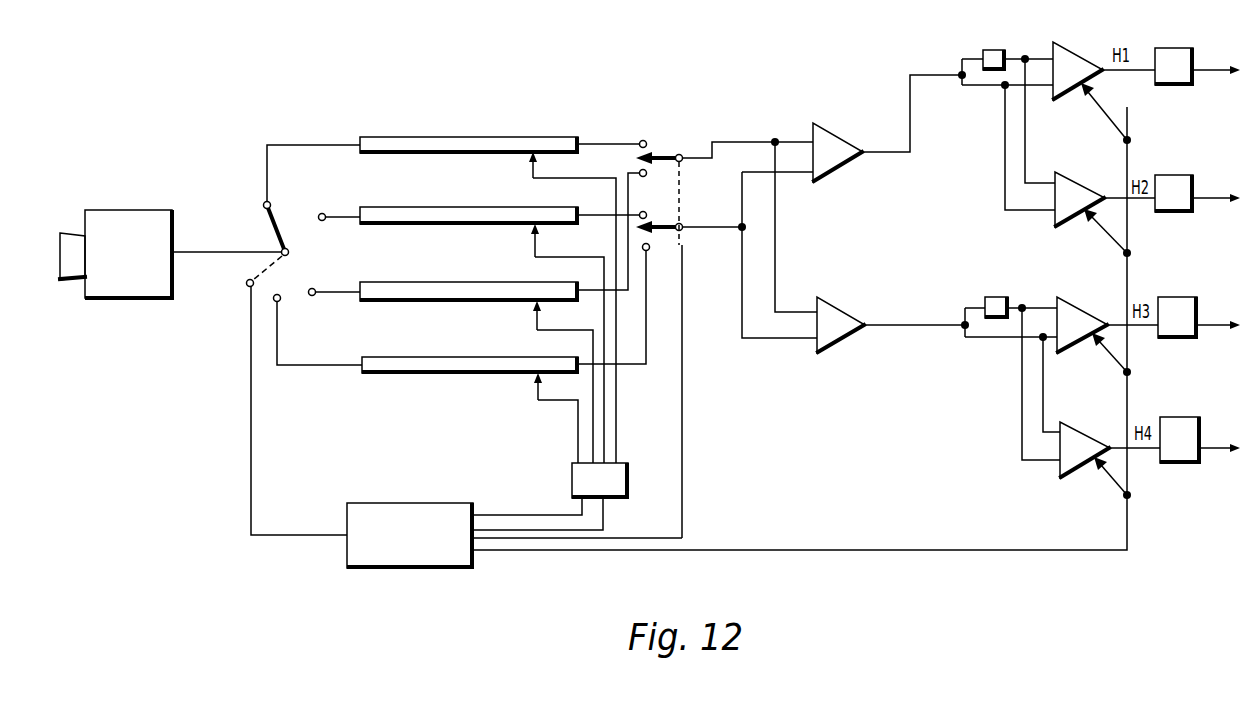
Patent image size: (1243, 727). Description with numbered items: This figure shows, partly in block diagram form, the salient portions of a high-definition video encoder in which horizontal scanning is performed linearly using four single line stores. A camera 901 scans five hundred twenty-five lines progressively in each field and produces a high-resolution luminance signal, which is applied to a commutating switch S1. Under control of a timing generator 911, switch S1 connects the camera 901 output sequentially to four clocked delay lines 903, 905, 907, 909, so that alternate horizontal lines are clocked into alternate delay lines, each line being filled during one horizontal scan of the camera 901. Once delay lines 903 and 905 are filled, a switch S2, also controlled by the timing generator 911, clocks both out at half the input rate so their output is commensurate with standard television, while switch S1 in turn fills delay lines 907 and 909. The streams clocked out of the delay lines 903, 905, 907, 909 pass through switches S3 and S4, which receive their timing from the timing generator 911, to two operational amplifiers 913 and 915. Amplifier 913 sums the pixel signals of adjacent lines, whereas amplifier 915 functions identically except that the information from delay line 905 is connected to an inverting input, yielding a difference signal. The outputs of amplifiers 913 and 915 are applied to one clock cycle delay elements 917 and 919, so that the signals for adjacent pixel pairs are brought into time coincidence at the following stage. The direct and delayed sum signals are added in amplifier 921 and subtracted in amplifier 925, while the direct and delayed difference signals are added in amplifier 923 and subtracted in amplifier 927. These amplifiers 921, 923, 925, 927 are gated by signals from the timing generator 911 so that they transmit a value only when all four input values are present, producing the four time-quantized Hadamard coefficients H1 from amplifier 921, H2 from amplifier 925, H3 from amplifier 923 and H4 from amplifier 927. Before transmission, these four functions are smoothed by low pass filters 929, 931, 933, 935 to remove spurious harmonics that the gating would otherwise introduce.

The camera 901 is at (150, 298).
The clocked delay line 903 is at (476, 136).
The clocked delay line 905 is at (466, 207).
The clocked delay line 907 is at (465, 282).
The clocked delay line 909 is at (466, 357).
The timing generator 911 is at (383, 502).
The operational amplifier 913 is at (833, 138).
The operational amplifier 915 is at (833, 303).
The one clock cycle delay element 917 is at (985, 49).
The one clock cycle delay element 919 is at (998, 296).
The operational amplifier 921 is at (1072, 50).
The operational amplifier 923 is at (1087, 302).
The operational amplifier 925 is at (1082, 172).
The operational amplifier 927 is at (1082, 422).
The low pass filter 929 is at (1177, 47).
The low pass filter 931 is at (1168, 175).
The low pass filter 933 is at (1179, 296).
The low pass filter 935 is at (1183, 416).
The commutating switch S1 is at (270, 220).
The switch S2 is at (600, 480).
The switch S3 is at (654, 156).
The switch S4 is at (664, 232).